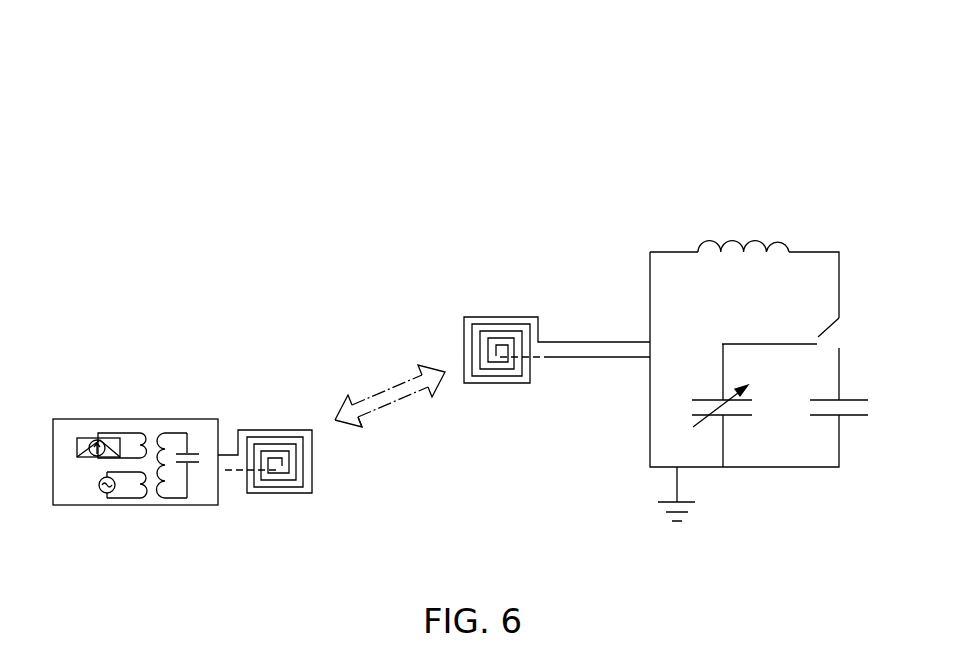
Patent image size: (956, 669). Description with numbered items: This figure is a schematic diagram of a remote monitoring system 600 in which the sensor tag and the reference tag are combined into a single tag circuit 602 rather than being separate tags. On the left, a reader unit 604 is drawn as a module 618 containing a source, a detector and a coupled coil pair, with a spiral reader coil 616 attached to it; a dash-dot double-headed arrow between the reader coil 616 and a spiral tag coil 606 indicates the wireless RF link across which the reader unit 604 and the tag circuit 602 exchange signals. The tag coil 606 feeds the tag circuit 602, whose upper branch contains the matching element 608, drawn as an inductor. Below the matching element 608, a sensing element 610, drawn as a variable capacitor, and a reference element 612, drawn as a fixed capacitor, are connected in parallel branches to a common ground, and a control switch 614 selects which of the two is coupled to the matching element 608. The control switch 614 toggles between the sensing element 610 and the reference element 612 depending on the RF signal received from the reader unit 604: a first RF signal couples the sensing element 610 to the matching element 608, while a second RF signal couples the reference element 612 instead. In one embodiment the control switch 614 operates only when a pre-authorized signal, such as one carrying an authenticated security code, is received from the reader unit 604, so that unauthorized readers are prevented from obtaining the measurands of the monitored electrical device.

The remote monitoring system 600 is at (715, 78).
The sensor circuit 602 is at (612, 252).
The reader unit 604 is at (100, 385).
The sensor coil 606 is at (502, 317).
The matching element 608 is at (733, 240).
The sensing element 610 is at (733, 415).
The reference element 612 is at (852, 398).
The control switch 614 is at (827, 320).
The reader coil 616 is at (275, 430).
The reader circuit module 618 is at (188, 418).